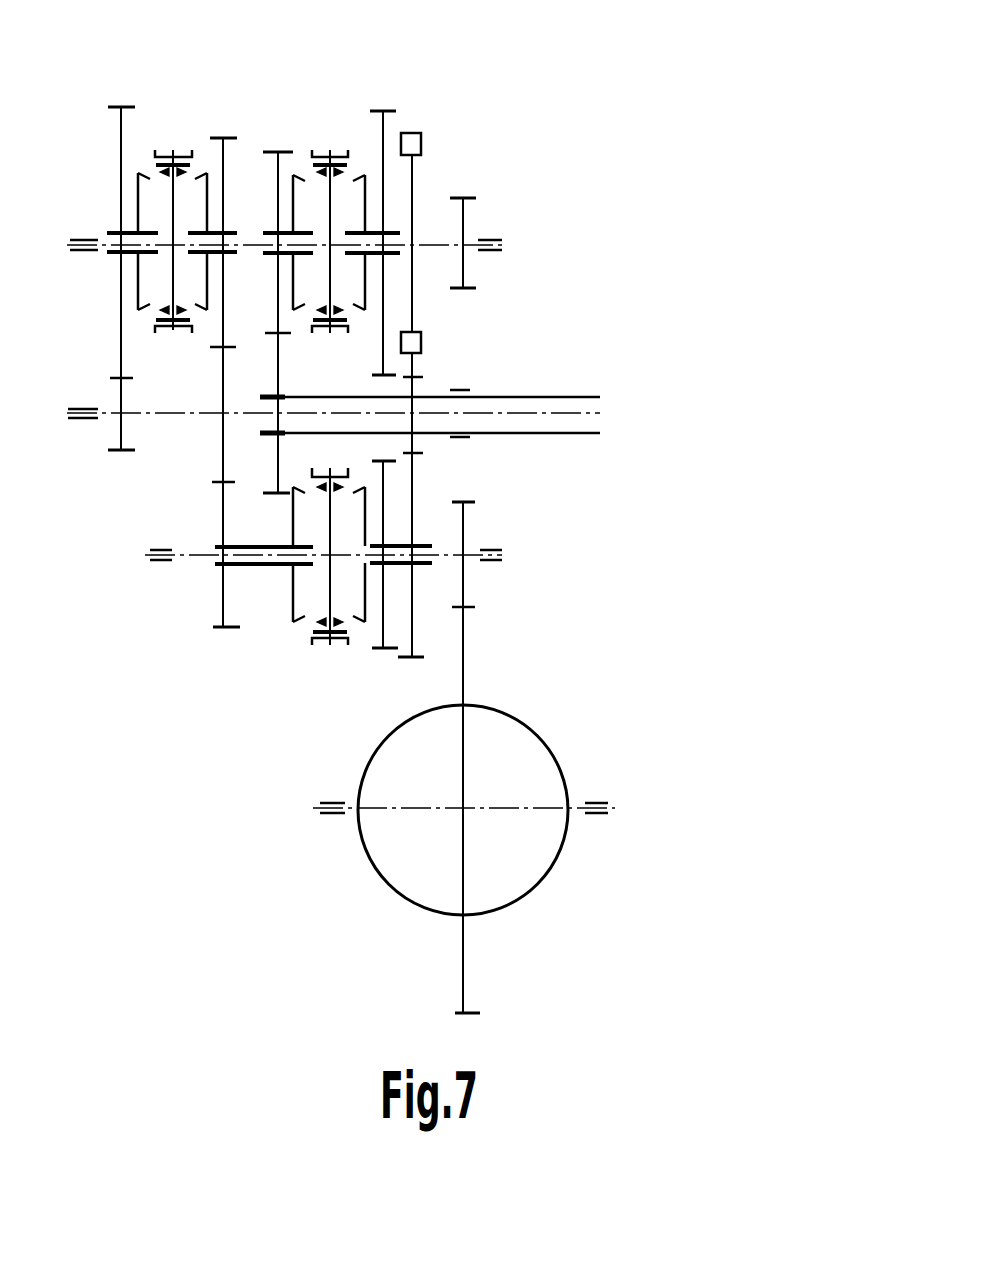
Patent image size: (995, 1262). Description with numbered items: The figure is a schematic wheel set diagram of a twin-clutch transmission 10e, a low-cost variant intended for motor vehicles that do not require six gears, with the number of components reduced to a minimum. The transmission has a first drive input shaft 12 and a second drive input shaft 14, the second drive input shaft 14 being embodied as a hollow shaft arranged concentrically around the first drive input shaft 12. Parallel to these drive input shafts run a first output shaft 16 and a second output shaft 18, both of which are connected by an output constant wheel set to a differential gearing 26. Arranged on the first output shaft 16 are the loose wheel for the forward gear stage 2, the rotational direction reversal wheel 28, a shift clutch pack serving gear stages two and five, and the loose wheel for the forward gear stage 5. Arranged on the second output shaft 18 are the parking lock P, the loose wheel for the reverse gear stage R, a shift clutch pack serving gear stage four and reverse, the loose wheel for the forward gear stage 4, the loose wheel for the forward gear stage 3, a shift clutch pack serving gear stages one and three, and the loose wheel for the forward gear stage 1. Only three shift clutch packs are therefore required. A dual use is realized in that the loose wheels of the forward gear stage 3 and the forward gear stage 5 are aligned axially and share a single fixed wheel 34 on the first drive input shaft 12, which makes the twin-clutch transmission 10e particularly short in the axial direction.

The forward gear stage 1 is at (132, 261).
The forward gear stage 3 is at (214, 363).
The forward gear stage 4 is at (288, 304).
The reverse gear stage R is at (372, 222).
The parking lock P is at (411, 378).
The second output shaft 18 is at (470, 243).
The second drive input shaft 14 is at (563, 395).
The first drive input shaft 12 is at (578, 413).
The fixed wheel 34 is at (222, 447).
The forward gear stage 5 is at (264, 576).
The forward gear stage 2 is at (392, 578).
The first output shaft 16 is at (475, 550).
The rotational direction reversal wheel 28 is at (385, 625).
The differential gearing 26 is at (553, 741).
The twin-clutch transmission 10e is at (747, 339).